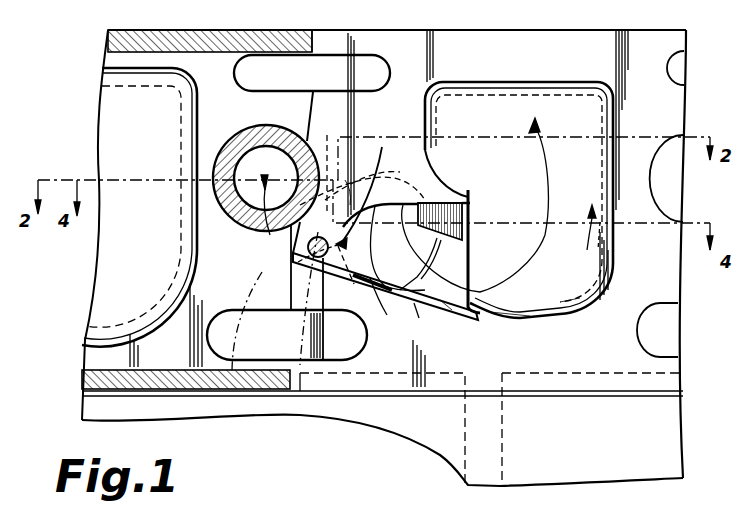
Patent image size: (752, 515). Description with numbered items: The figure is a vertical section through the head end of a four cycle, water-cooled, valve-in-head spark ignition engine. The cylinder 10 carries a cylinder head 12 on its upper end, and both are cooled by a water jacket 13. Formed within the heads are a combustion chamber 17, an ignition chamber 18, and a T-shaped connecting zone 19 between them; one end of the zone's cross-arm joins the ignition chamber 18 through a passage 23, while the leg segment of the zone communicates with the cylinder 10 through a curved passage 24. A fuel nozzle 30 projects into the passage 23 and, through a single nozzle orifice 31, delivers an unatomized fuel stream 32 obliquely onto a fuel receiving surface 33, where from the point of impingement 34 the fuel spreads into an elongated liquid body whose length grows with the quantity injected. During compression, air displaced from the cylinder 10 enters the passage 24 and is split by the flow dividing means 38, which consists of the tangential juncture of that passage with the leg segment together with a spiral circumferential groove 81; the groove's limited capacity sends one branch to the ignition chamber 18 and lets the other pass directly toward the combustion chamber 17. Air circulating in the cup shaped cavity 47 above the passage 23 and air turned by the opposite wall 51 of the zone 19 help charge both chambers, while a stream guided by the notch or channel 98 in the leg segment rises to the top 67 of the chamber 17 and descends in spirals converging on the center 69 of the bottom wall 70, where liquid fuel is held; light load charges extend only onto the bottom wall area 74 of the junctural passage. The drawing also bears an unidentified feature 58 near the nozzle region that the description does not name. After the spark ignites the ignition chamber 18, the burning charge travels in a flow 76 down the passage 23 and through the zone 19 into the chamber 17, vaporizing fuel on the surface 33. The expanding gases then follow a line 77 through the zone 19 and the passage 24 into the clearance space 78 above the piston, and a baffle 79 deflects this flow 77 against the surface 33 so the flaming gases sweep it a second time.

The cylinder 10 is at (465, 445).
The cylinder head 12 is at (325, 38).
The jacket 13 is at (311, 85).
The combustion chamber 17 is at (108, 135).
The ignition chamber 18 is at (258, 130).
The T-shaped connecting zone 19 is at (392, 247).
The passage 23 is at (300, 262).
The curved passage 24 is at (248, 272).
The fuel nozzle 30 is at (325, 272).
The nozzle orifice 31 is at (347, 180).
The unatomized fuel stream 32 is at (349, 290).
The fuel receiving surface 33 is at (424, 321).
The point of impingement 34 is at (387, 305).
The flow dividing means 38 is at (328, 166).
The cup shaped cavity 47 is at (370, 194).
The opposite wall 51 is at (471, 262).
The lever 58 is at (282, 125).
The top of chamber 67 is at (513, 84).
The center of bottom wall 69 is at (521, 318).
The bottom wall 70 is at (561, 310).
The bottom wall area 74 is at (449, 308).
The flow 76 is at (537, 306).
The line of flow 77 is at (552, 191).
The clearance space 78 is at (385, 376).
The baffle 79 is at (468, 197).
The circumferential groove 81 is at (392, 181).
The notch or channel 98 is at (470, 221).